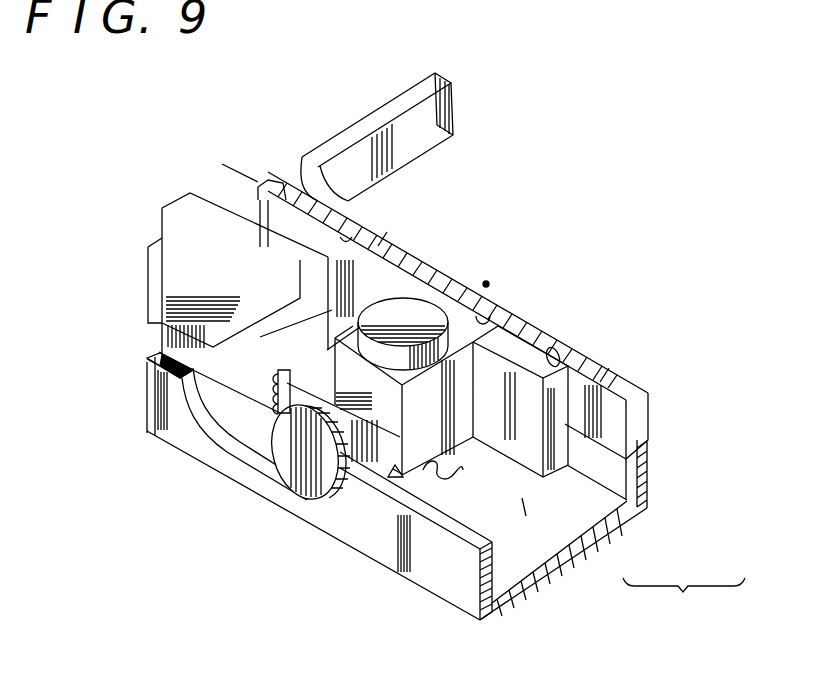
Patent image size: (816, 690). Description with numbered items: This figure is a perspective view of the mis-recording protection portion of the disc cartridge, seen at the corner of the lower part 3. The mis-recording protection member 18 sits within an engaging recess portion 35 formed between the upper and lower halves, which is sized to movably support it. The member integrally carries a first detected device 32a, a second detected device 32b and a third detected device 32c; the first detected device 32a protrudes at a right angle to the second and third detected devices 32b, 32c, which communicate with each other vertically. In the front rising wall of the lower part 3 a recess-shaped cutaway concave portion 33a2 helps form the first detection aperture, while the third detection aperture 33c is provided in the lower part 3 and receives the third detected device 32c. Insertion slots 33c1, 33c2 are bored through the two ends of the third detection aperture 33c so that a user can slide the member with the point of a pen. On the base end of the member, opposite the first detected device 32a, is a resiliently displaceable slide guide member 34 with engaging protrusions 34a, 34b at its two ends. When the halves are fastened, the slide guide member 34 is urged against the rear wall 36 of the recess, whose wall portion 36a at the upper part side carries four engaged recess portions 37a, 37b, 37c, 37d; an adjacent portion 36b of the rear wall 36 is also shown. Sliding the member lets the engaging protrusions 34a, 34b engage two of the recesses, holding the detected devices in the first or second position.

The lower part 3 is at (380, 547).
The mis-recording protection member 18 is at (489, 283).
The first detected device 32a is at (305, 497).
The second detected device 32b is at (447, 273).
The third detected device 32c is at (433, 484).
The cutaway concave portion 33a2 is at (217, 437).
The third detection aperture 33c is at (273, 378).
The insertion slot 33c1 is at (274, 371).
The insertion slot 33c2 is at (536, 514).
The slide guide member 34 is at (560, 346).
The engaging protrusion 34a is at (380, 240).
The engaging protrusion 34b is at (608, 369).
The engaging recess portion 35 is at (510, 534).
The rear wall 36 is at (684, 597).
The wall portion 36a is at (650, 423).
The inner wall portion 36b is at (645, 463).
The engaged recess portion 37a is at (273, 192).
The engaged recess portion 37b is at (347, 242).
The engaged recess portion 37c is at (503, 302).
The engaged recess portion 37d is at (563, 340).